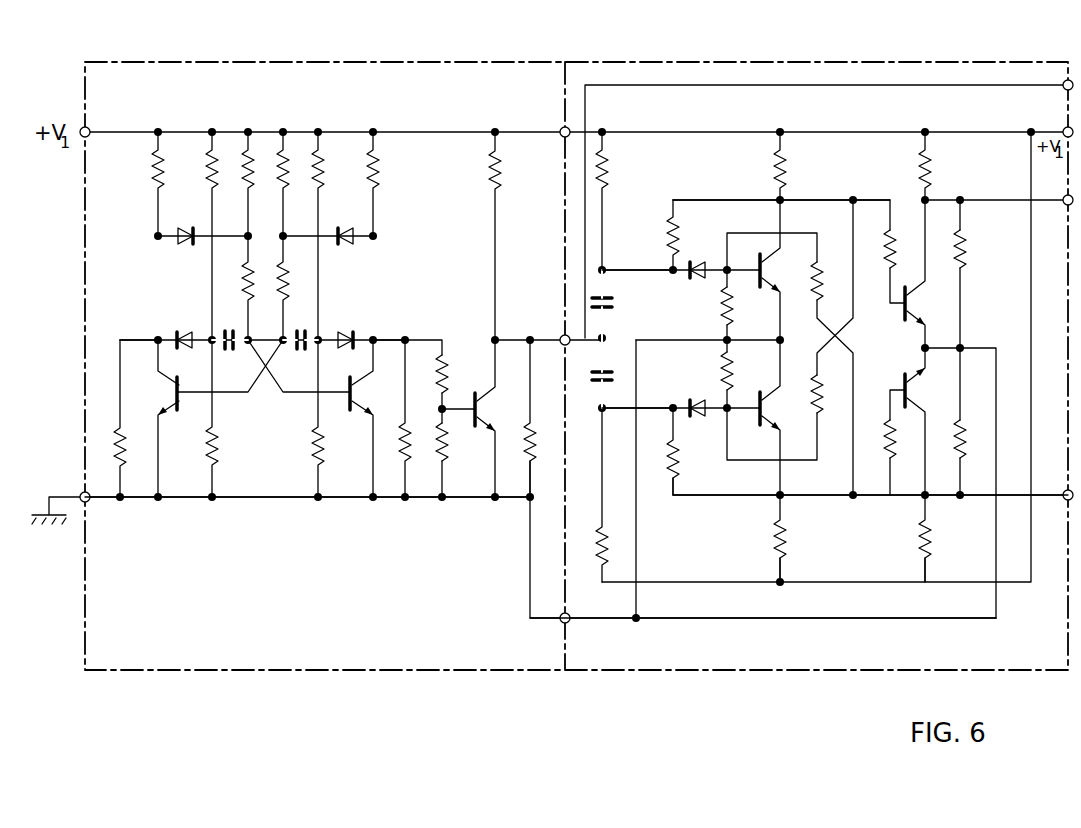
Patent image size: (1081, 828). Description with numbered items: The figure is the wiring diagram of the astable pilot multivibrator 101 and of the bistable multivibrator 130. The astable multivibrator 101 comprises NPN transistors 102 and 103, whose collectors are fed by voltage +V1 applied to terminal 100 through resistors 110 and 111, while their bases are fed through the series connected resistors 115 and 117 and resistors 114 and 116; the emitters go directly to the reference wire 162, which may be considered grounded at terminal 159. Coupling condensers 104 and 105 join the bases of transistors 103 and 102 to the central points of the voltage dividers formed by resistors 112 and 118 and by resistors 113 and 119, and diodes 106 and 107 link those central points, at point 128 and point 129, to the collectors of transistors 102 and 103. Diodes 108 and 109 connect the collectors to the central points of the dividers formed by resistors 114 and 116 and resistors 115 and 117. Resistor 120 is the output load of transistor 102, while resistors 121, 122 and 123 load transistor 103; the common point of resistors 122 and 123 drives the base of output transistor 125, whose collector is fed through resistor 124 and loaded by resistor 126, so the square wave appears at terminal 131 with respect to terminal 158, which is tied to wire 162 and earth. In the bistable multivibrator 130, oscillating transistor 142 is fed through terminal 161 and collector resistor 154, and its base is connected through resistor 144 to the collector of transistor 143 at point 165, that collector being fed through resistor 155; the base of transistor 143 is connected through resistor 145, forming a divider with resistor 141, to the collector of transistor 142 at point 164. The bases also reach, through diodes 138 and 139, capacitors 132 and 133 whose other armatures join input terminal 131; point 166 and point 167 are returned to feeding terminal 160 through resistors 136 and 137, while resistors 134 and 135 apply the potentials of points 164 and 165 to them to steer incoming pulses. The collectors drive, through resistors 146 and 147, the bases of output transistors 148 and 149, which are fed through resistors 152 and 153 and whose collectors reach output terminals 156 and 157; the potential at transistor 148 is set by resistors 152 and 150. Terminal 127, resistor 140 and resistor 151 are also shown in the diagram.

The terminal 100 is at (107, 119).
The astable pilot multivibrator 101 is at (360, 78).
The transistor 102 is at (150, 418).
The transistor 103 is at (375, 418).
The coupling condenser 104 is at (232, 358).
The coupling condenser 105 is at (297, 358).
The diode 106 is at (183, 324).
The diode 107 is at (343, 324).
The diode 108 is at (185, 223).
The diode 109 is at (345, 223).
The resistor 110 is at (138, 184).
The resistor 111 is at (393, 184).
The resistor 112 is at (206, 158).
The resistor 113 is at (325, 236).
The resistor 114 is at (244, 150).
The resistor 115 is at (280, 184).
The resistor 116 is at (231, 288).
The resistor 117 is at (291, 288).
The resistor 118 is at (234, 418).
The resistor 119 is at (293, 418).
The resistor 120 is at (103, 418).
The resistor 121 is at (390, 418).
The resistor 122 is at (450, 372).
The resistor 123 is at (450, 442).
The resistor 124 is at (517, 236).
The output transistor 125 is at (501, 418).
The resistor 126 is at (538, 418).
The terminal 127 is at (1049, 77).
The point 128 is at (156, 338).
The point 129 is at (390, 320).
The bistable multivibrator 130 is at (678, 72).
The terminal 131 is at (556, 336).
The capacitor 132 is at (612, 304).
The capacitor 133 is at (612, 373).
The resistor 134 is at (650, 235).
The resistor 135 is at (693, 451).
The resistor 136 is at (625, 201).
The resistor 137 is at (611, 495).
The diode 138 is at (688, 283).
The diode 139 is at (688, 394).
The resistor 140 is at (736, 305).
The resistor 141 is at (736, 372).
The oscillating transistor 142 is at (781, 270).
The oscillating transistor 143 is at (758, 417).
The resistor 144 is at (827, 283).
The resistor 145 is at (827, 395).
The resistor 146 is at (874, 248).
The resistor 147 is at (874, 440).
The output transistor 148 is at (930, 274).
The output transistor 149 is at (930, 421).
The resistor 150 is at (983, 250).
The resistor 151 is at (969, 441).
The resistor 152 is at (896, 166).
The resistor 153 is at (895, 538).
The collector resistor 154 is at (751, 166).
The resistor 155 is at (751, 538).
The output terminal 156 is at (1051, 210).
The output terminal 157 is at (1051, 487).
The terminal 158 is at (586, 633).
The terminal 159 is at (105, 513).
The feeding terminal 160 is at (1047, 114).
The terminal 161 is at (564, 128).
The reference wire 162 is at (262, 500).
The point 164 is at (774, 204).
The point 165 is at (778, 502).
The point 166 is at (668, 270).
The point 167 is at (672, 408).